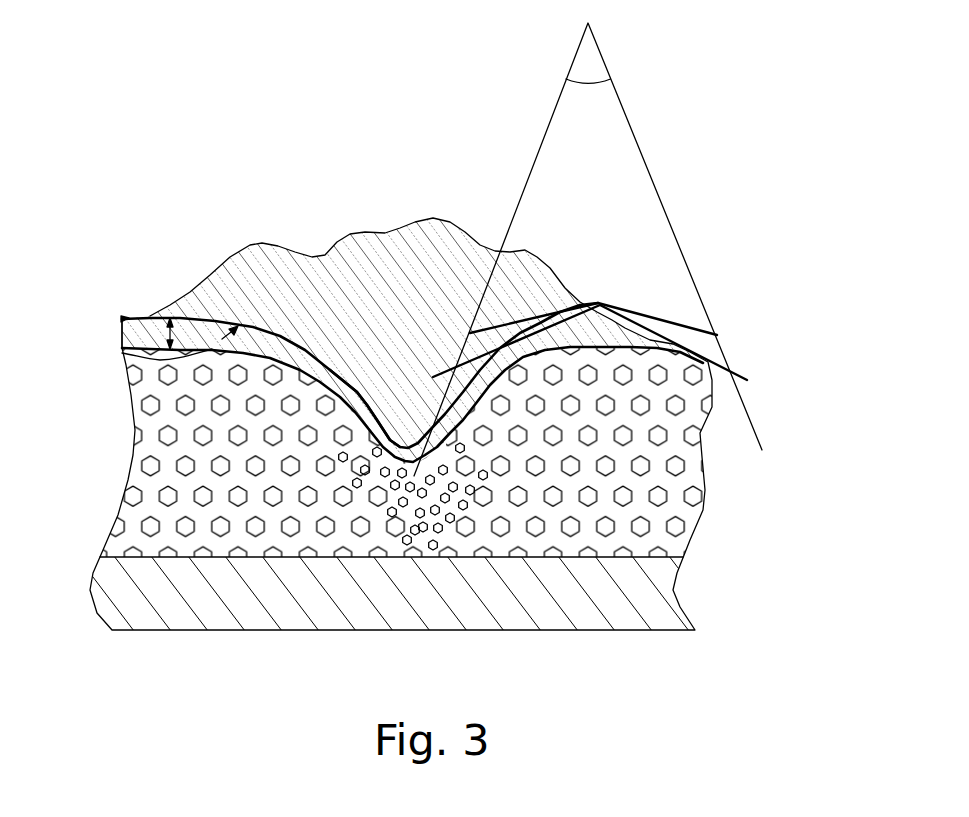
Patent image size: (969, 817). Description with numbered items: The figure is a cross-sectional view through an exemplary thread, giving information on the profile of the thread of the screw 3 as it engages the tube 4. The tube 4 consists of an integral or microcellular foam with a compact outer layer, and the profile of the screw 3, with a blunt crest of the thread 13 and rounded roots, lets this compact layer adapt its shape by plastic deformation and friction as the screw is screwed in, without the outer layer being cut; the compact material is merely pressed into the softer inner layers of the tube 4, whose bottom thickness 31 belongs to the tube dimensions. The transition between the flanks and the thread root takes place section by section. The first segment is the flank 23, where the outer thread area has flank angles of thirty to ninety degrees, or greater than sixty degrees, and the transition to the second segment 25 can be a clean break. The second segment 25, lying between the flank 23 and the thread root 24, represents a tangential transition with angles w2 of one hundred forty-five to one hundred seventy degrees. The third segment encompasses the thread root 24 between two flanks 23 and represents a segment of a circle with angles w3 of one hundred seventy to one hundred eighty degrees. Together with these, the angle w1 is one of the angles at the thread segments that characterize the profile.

The screw 3 is at (537, 258).
The tube 4 is at (691, 465).
The crest of the thread 13 is at (395, 450).
The flank, first segment 23 is at (376, 423).
The thread root 24 is at (121, 319).
The second segment 25 is at (122, 353).
The bottom thickness 31 is at (161, 330).
The angle at thread segment w1 is at (587, 76).
The angle at thread segment w2 is at (599, 292).
The angle at thread segment w3 is at (603, 305).